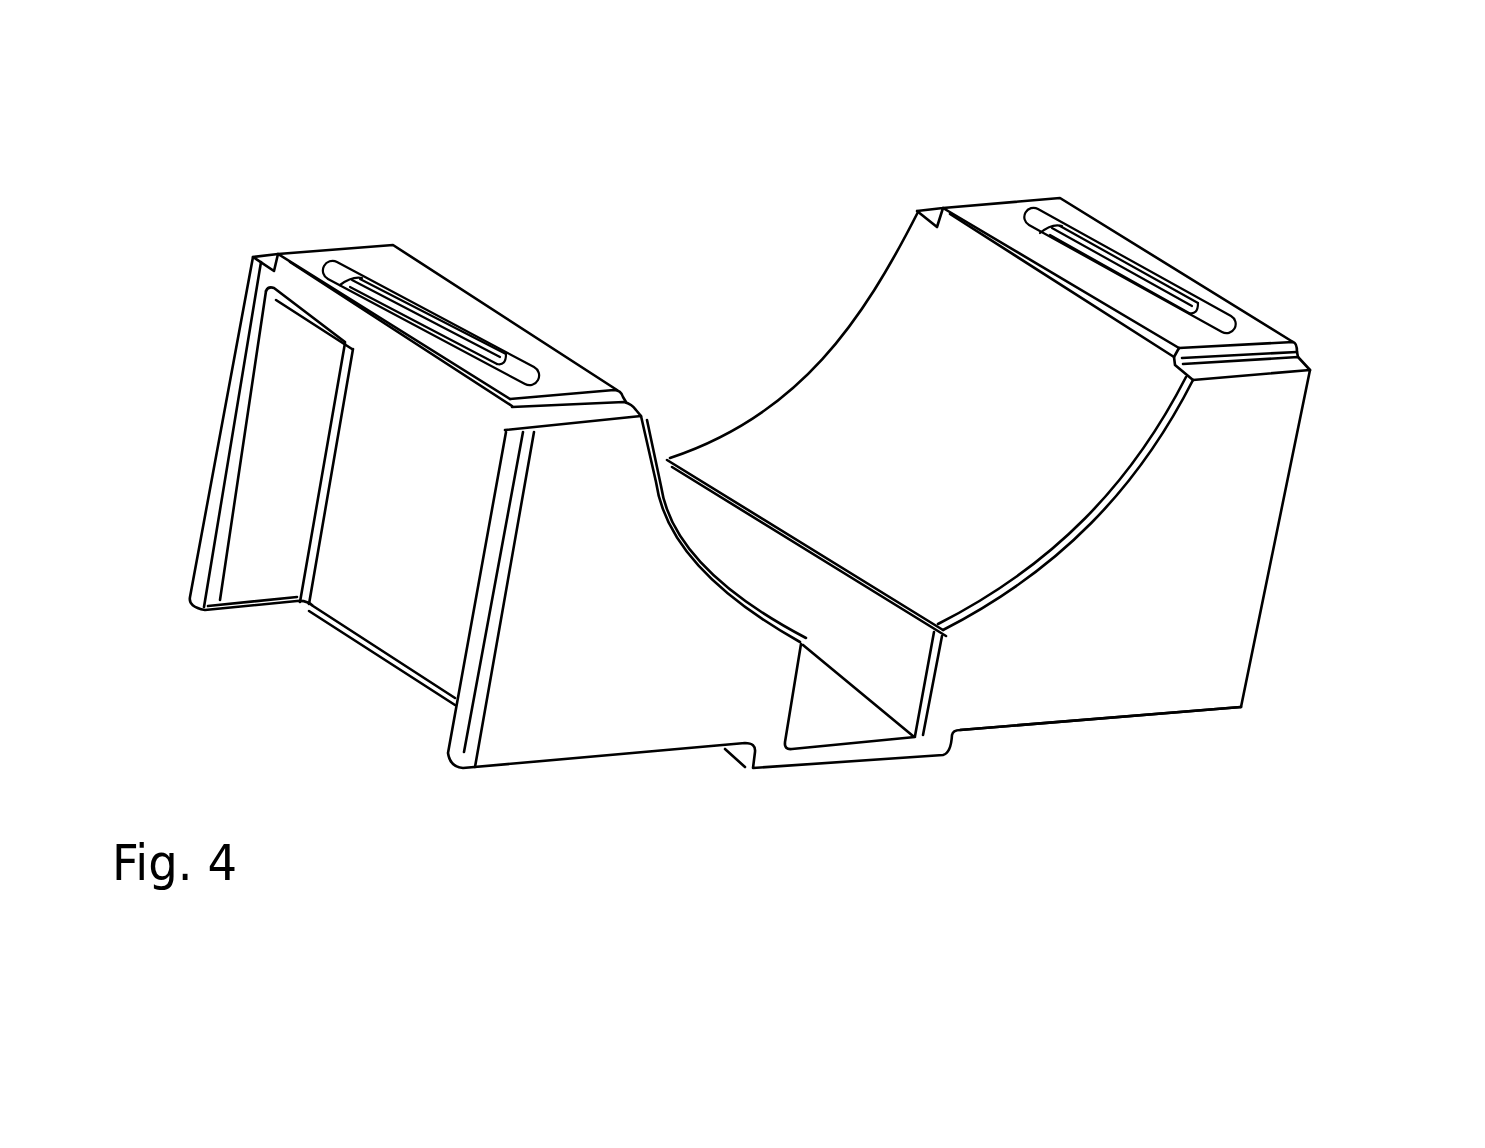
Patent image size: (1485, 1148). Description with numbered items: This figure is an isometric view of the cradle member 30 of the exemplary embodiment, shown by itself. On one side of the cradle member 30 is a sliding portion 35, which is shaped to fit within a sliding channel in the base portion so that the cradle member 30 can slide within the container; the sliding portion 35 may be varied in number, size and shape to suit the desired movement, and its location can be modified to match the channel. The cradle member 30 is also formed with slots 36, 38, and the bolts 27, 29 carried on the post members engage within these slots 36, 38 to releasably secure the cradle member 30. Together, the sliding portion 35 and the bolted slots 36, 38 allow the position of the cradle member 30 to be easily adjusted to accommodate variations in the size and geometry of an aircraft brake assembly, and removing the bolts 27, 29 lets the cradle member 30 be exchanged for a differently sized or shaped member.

The bolt 27 is at (1217, 303).
The bolt 29 is at (493, 353).
The cradle member 30 is at (1160, 730).
The sliding portion 35 is at (850, 720).
The slot 36 is at (1127, 263).
The slot 38 is at (400, 284).